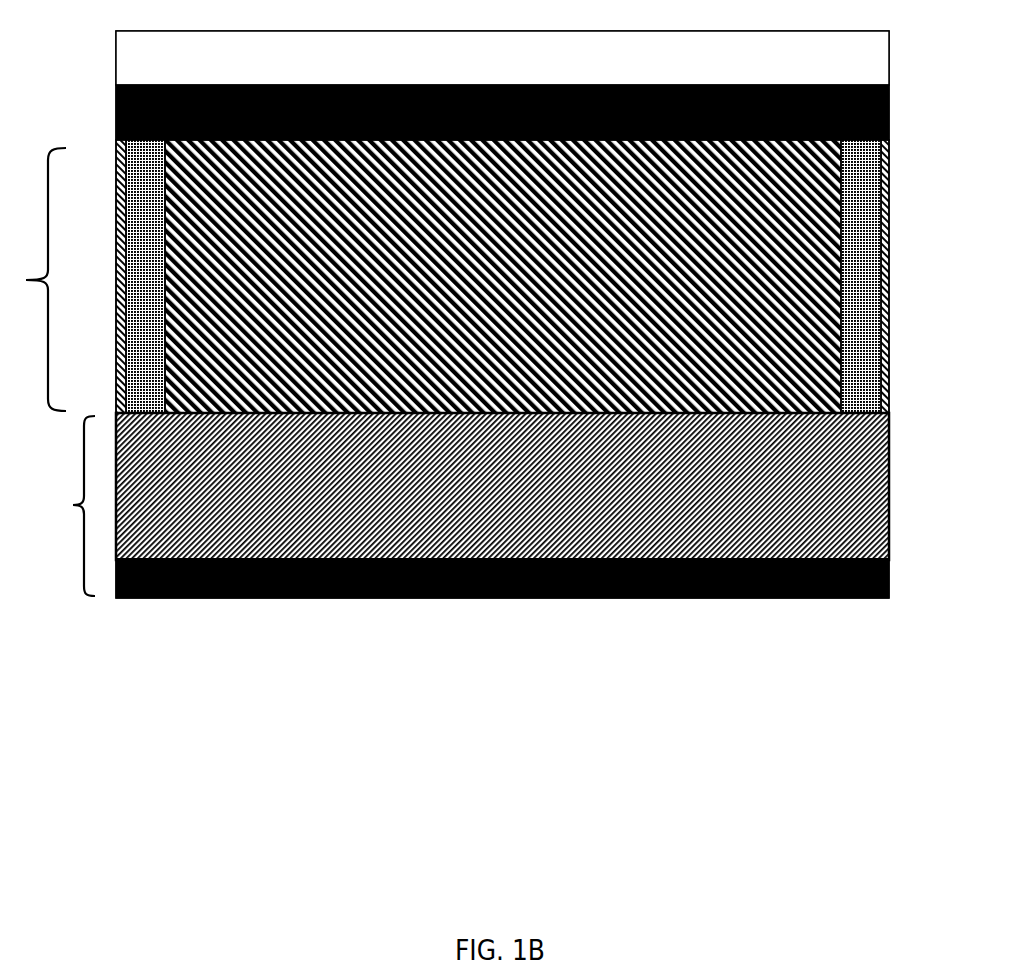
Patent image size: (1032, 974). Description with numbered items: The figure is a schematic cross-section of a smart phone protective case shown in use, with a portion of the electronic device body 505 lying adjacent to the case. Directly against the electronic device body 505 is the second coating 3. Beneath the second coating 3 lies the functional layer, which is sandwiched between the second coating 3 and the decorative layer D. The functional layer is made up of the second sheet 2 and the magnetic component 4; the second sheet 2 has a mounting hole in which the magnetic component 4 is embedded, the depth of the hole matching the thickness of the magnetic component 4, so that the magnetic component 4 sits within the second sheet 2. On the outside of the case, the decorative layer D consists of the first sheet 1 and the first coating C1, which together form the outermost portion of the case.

The electronic device body 505 is at (585, 73).
The second coating 3 is at (872, 100).
The second sheet 2 is at (737, 339).
The magnetic component 4 is at (135, 200).
The first sheet 1 is at (843, 512).
The first coating C1 is at (845, 562).
The decorative layer D is at (61, 506).